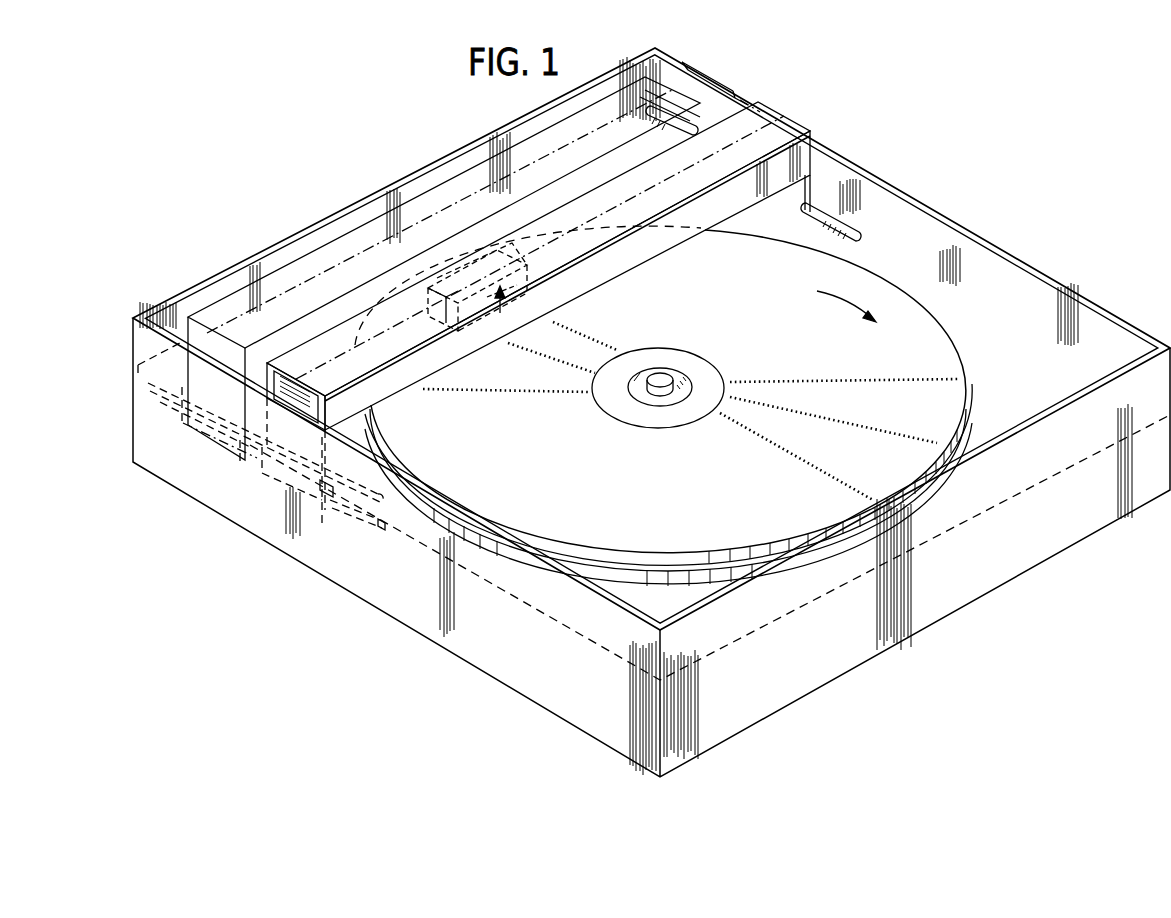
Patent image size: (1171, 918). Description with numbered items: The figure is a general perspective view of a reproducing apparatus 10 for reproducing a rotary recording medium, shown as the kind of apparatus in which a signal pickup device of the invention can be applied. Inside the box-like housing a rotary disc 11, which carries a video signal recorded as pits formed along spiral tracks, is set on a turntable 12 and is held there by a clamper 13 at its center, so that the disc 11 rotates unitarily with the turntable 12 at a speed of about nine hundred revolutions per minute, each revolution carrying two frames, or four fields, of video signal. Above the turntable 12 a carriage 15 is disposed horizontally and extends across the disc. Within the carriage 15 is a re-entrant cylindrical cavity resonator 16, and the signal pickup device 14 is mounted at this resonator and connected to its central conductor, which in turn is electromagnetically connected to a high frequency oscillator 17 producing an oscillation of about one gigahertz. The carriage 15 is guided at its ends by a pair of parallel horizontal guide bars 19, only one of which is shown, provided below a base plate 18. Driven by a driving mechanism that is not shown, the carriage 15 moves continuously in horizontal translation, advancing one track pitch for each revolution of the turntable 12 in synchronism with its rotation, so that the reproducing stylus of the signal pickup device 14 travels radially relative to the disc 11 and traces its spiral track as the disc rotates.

The reproducing apparatus 10 is at (899, 157).
The rotary disc 11 is at (947, 391).
The turntable 12 is at (700, 580).
The clamper 13 is at (652, 402).
The signal pickup device 14 is at (503, 320).
The carriage 15 is at (435, 190).
The re-entrant cylindrical cavity resonator 16 is at (593, 278).
The high frequency oscillator 17 is at (702, 212).
The base plate 18 is at (915, 258).
The guide bars 19 is at (346, 508).